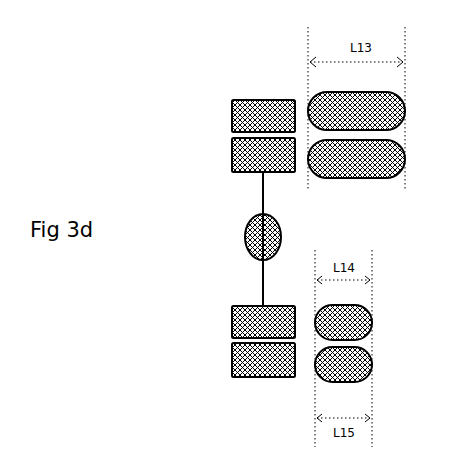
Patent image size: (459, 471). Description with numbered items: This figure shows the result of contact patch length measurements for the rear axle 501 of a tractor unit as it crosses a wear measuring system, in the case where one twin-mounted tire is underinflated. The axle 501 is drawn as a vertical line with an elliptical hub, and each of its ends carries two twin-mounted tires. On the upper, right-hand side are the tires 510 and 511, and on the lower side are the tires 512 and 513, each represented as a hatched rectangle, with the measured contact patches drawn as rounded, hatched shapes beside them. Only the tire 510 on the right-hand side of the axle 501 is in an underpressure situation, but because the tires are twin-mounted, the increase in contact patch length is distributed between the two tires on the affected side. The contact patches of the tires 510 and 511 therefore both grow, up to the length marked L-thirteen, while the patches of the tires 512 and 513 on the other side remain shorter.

The rear axle 501 is at (262, 214).
The tire 510 is at (232, 157).
The tire 511 is at (232, 117).
The third electrode 512 is at (232, 322).
The fourth electrode 513 is at (232, 365).